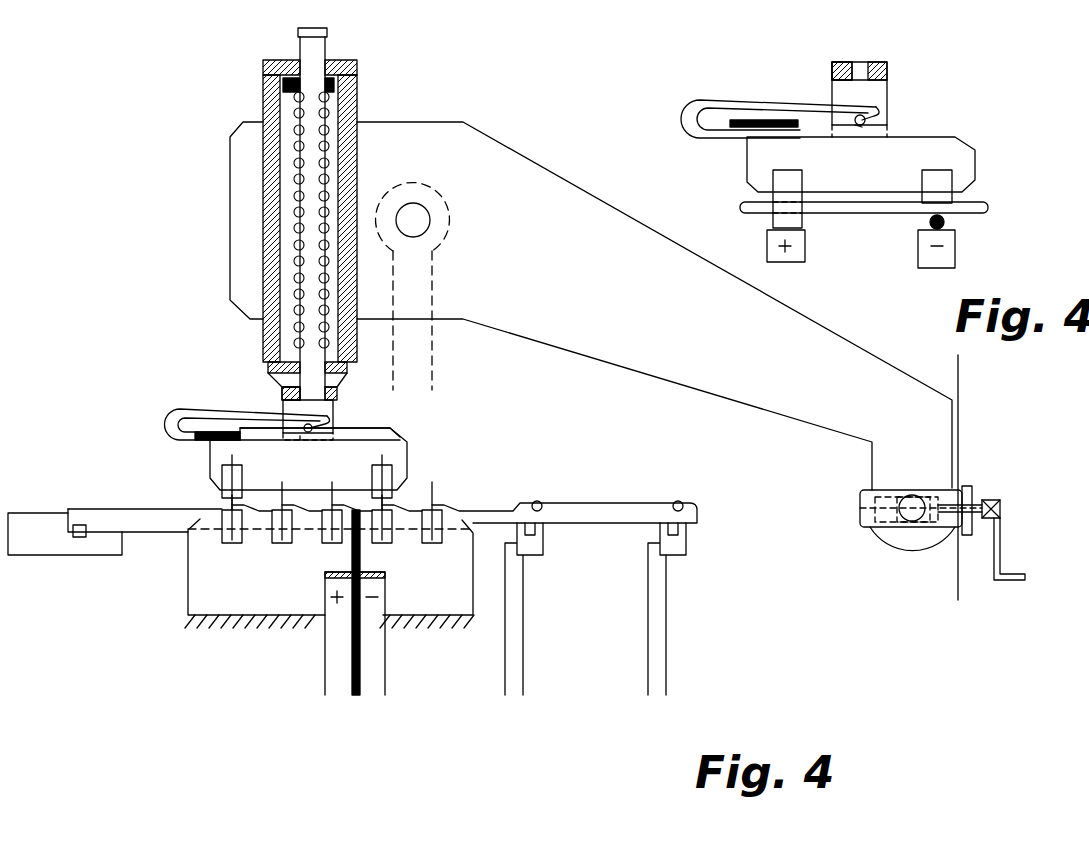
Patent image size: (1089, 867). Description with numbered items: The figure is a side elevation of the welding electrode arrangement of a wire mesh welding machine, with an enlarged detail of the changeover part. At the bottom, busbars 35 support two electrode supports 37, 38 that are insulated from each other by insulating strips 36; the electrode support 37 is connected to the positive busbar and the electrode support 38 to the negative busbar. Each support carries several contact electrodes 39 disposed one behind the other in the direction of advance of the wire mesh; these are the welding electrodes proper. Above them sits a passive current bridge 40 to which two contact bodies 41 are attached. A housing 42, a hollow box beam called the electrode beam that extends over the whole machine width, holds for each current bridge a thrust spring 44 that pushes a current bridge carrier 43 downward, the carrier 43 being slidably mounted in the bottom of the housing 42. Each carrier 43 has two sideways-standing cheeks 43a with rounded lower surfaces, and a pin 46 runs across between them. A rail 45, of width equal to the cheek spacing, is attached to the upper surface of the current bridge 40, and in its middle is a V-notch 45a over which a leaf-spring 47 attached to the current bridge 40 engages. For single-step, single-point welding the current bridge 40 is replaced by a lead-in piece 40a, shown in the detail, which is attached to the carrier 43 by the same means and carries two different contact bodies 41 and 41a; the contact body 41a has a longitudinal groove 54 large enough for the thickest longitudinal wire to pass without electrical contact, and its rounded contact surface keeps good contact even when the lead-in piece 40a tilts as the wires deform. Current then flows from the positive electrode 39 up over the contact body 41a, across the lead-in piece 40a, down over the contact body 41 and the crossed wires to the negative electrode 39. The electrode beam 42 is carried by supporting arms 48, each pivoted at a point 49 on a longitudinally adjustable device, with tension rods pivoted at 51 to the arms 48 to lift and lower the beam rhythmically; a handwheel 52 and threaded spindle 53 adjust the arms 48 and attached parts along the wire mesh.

In FIG. 4, the busbars 35 is at (333, 678).
In FIG. 4, the insulating strips 36 is at (357, 607).
In FIG. 4, the electrode support 37 is at (290, 605).
In FIG. 4, the electrode support 38 is at (458, 607).
In FIG. 4, the contact electrodes 39 is at (330, 540).
In FIG. 4A, the contact electrodes 39 is at (805, 246).
In FIG. 4, the passive current bridge 40 is at (375, 459).
In FIG. 4A, the lead-in piece 40a is at (965, 156).
In FIG. 4, the contact body 41 is at (228, 475).
In FIG. 4A, the contact body 41 is at (940, 182).
In FIG. 4A, the contact body 41a is at (775, 183).
In FIG. 4, the housing 42 is at (347, 91).
In FIG. 4, the current bridge carrier 43 is at (337, 394).
In FIG. 4A, the current bridge carrier 43 is at (888, 70).
In FIG. 4, the cheeks 43a is at (283, 408).
In FIG. 4A, the cheeks 43a is at (830, 80).
In FIG. 4, the thrust spring 44 is at (300, 88).
In FIG. 4, the rail 45 is at (378, 438).
In FIG. 4, the V-notch 45a is at (308, 436).
In FIG. 4A, the V-notch 45a is at (862, 127).
In FIG. 4, the pin 46 is at (315, 428).
In FIG. 4A, the pin 46 is at (868, 120).
In FIG. 4, the leaf-spring 47 is at (165, 425).
In FIG. 4A, the leaf-spring 47 is at (695, 108).
In FIG. 4, the supporting arms 48 is at (602, 202).
In FIG. 4, the pivot point 49 is at (910, 520).
In FIG. 4, the pivot 51 is at (433, 217).
In FIG. 4, the handwheel 52 is at (1000, 535).
In FIG. 4, the threaded spindle 53 is at (945, 505).
In FIG. 4A, the longitudinal groove 54 is at (775, 218).